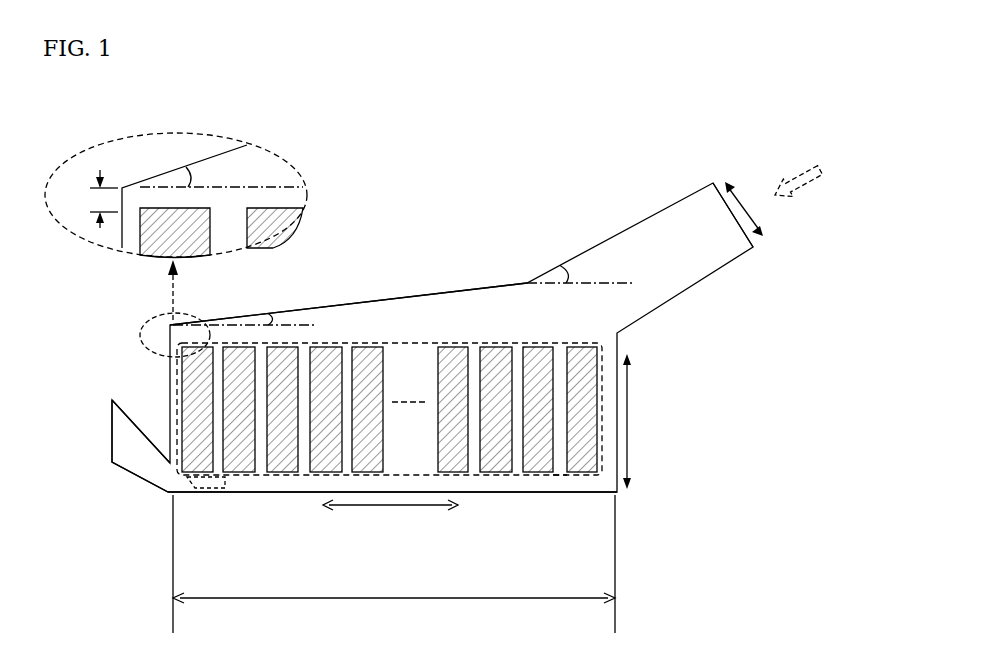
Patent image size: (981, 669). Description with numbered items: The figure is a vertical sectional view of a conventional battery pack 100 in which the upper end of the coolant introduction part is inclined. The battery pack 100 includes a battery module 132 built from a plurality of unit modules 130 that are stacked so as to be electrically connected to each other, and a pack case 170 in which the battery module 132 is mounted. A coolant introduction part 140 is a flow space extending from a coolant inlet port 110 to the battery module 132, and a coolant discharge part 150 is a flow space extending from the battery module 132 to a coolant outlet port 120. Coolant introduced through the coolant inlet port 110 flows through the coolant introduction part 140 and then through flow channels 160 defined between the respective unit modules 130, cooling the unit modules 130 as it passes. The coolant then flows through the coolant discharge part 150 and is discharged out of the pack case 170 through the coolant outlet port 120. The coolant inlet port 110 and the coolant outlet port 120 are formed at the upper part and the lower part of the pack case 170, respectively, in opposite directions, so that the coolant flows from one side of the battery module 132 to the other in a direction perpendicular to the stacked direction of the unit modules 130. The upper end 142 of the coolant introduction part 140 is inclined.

The battery pack 100 is at (56, 134).
The coolant inlet port 110 is at (715, 257).
The coolant outlet port 120 is at (132, 462).
The unit modules 130 is at (247, 473).
The battery module 132 is at (510, 474).
The coolant introduction part 140 is at (501, 318).
The upper end of the coolant introduction part 142 is at (306, 309).
The coolant discharge part 150 is at (307, 497).
The flow channels 160 is at (560, 462).
The pack case 170 is at (158, 378).